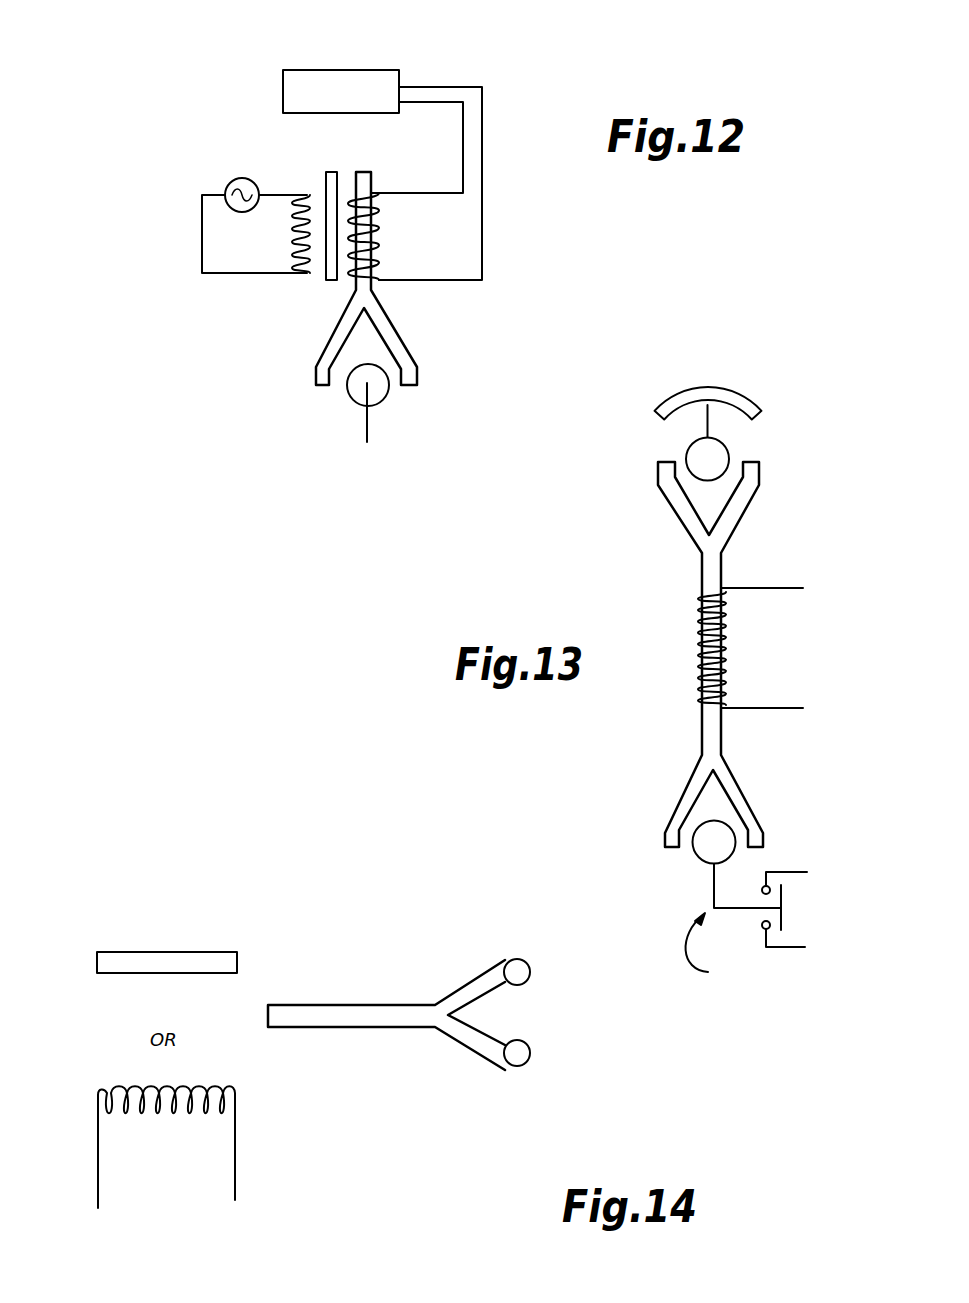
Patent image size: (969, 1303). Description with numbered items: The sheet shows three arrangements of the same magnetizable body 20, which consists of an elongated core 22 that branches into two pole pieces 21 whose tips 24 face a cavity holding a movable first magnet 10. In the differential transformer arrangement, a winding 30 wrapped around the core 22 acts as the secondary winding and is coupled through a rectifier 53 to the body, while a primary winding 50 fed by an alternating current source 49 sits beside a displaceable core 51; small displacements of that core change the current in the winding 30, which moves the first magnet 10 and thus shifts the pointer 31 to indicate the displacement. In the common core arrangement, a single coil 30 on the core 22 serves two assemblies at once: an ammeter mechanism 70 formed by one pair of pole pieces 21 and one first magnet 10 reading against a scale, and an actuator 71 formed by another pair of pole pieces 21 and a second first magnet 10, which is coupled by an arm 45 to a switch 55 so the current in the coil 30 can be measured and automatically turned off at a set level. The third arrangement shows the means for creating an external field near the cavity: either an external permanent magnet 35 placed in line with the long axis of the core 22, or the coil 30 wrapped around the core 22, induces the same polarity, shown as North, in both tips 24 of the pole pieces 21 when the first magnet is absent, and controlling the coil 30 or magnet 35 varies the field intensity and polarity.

In FIG. 12, the first magnet 10 is at (358, 403).
In FIG. 13, the first magnet 10 is at (728, 453).
In FIG. 12, the fork-shaped yoke 20 is at (375, 273).
In FIG. 14, the fork-shaped yoke 20 is at (425, 1020).
In FIG. 12, the pole pieces 21 is at (316, 384).
In FIG. 13, the pole pieces 21 is at (658, 468).
In FIG. 14, the pole pieces 21 is at (477, 975).
In FIG. 12, the core 22 is at (375, 273).
In FIG. 13, the core 22 is at (723, 654).
In FIG. 14, the core 22 is at (386, 1020).
In FIG. 14, the tips 24 is at (530, 983).
In FIG. 12, the coil 30 is at (373, 244).
In FIG. 13, the coil 30 is at (778, 588).
In FIG. 14, the coil 30 is at (98, 1142).
In FIG. 12, the pointer 31 is at (367, 437).
In FIG. 14, the external permanent magnet 35 is at (100, 973).
In FIG. 13, the arm 45 is at (714, 886).
In FIG. 12, the alternating current source 49 is at (248, 177).
In FIG. 12, the primary winding 50 is at (307, 195).
In FIG. 12, the displaceable core 51 is at (327, 172).
In FIG. 12, the rectifier 53 is at (377, 70).
In FIG. 13, the switch 55 is at (781, 894).
In FIG. 13, the ammeter mechanism 70 is at (762, 450).
In FIG. 13, the actuator 71 is at (711, 950).